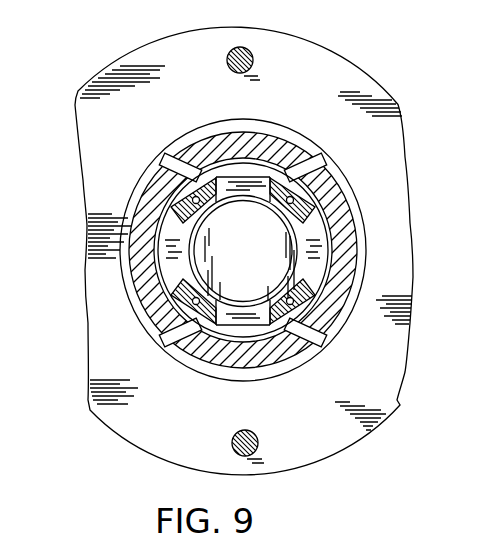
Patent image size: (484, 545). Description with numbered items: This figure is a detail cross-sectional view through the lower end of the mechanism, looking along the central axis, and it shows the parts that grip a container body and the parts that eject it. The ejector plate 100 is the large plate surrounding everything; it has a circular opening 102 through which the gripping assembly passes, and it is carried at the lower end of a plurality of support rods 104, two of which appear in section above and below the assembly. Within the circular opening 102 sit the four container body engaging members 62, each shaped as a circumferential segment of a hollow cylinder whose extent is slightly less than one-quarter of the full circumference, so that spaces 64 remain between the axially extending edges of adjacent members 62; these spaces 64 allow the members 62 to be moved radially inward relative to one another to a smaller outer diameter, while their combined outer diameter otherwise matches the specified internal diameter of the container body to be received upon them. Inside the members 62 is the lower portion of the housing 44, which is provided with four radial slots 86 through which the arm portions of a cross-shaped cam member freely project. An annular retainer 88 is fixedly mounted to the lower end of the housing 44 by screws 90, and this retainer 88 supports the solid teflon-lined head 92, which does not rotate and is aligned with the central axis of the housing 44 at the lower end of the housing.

The housing 44 is at (198, 177).
The container body engaging member 62 is at (258, 146).
The space 64 is at (162, 163).
The radial slot 86 is at (168, 228).
The annular retainer 88 is at (312, 254).
The screw 90 is at (278, 208).
The head 92 is at (266, 274).
The ejector plate 100 is at (340, 443).
The circular opening 102 is at (308, 358).
The support rod 104 is at (254, 61).